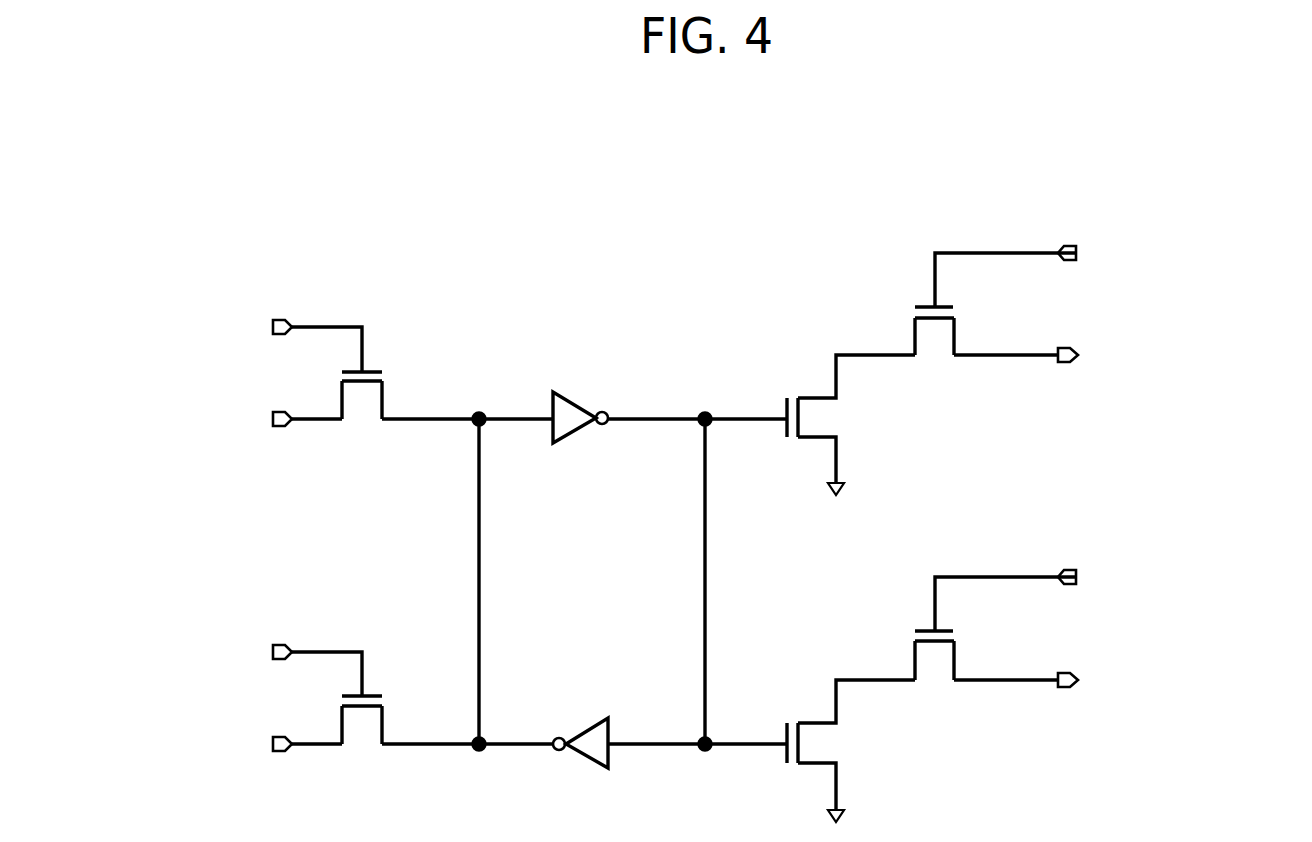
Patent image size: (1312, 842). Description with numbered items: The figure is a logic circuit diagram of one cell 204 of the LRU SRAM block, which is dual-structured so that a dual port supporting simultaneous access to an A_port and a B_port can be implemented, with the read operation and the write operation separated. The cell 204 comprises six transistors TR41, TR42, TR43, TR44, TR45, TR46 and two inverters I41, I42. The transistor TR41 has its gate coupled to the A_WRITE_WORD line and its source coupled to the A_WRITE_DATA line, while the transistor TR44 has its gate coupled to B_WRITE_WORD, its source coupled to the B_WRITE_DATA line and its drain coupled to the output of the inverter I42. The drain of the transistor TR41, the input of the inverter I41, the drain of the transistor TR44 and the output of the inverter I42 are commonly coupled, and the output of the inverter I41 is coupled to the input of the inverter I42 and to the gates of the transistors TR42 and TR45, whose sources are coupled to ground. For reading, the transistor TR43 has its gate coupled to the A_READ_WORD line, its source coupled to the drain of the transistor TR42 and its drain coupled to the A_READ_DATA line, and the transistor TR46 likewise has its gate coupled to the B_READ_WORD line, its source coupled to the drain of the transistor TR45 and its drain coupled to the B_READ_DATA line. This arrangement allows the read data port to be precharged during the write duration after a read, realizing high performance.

The LRU SRAM cell 204 is at (1022, 176).
The transistor TR41 is at (386, 394).
The transistor TR42 is at (814, 396).
The transistor TR43 is at (961, 331).
The transistor TR44 is at (386, 718).
The transistor TR45 is at (813, 722).
The transistor TR46 is at (961, 654).
The inverter I41 is at (575, 401).
The inverter I42 is at (585, 728).